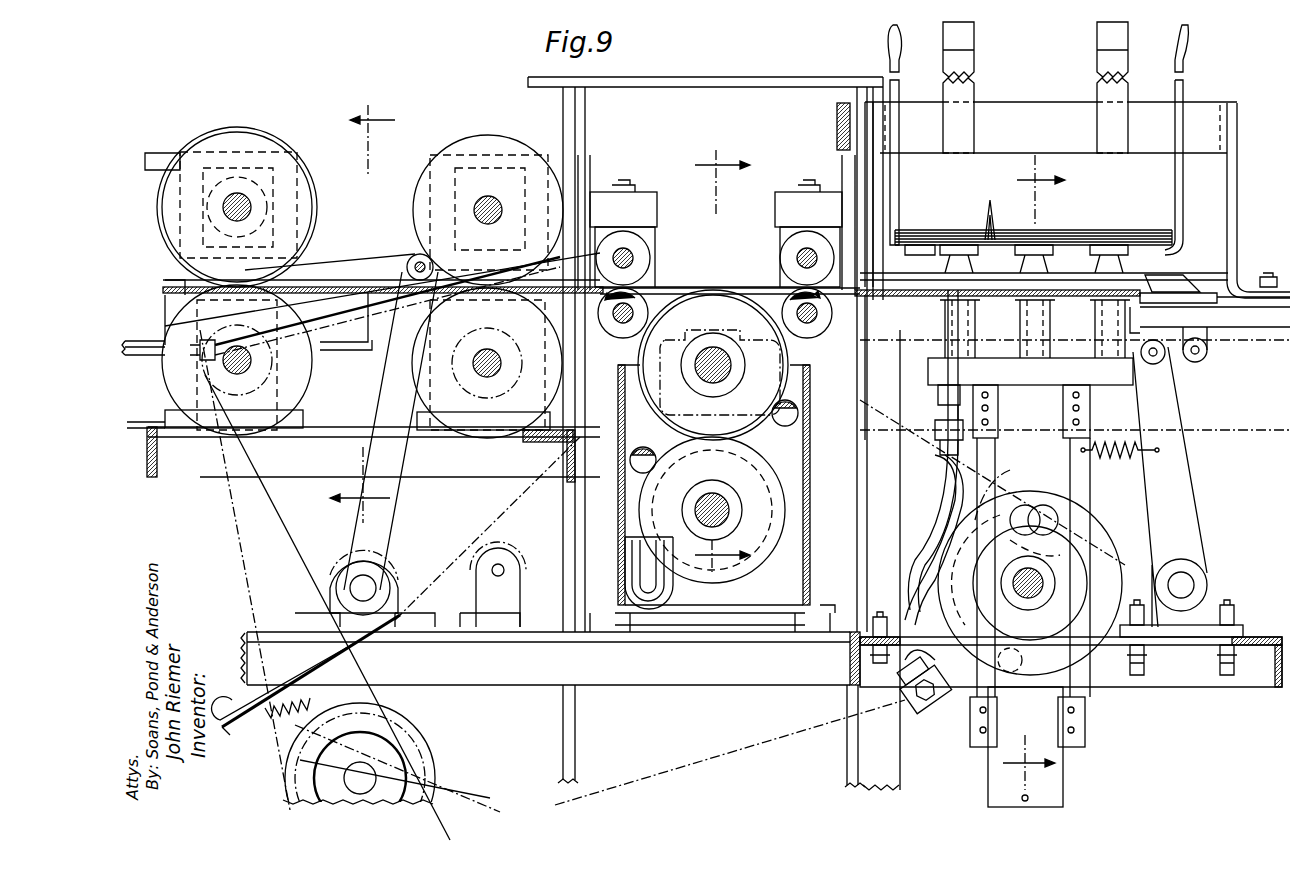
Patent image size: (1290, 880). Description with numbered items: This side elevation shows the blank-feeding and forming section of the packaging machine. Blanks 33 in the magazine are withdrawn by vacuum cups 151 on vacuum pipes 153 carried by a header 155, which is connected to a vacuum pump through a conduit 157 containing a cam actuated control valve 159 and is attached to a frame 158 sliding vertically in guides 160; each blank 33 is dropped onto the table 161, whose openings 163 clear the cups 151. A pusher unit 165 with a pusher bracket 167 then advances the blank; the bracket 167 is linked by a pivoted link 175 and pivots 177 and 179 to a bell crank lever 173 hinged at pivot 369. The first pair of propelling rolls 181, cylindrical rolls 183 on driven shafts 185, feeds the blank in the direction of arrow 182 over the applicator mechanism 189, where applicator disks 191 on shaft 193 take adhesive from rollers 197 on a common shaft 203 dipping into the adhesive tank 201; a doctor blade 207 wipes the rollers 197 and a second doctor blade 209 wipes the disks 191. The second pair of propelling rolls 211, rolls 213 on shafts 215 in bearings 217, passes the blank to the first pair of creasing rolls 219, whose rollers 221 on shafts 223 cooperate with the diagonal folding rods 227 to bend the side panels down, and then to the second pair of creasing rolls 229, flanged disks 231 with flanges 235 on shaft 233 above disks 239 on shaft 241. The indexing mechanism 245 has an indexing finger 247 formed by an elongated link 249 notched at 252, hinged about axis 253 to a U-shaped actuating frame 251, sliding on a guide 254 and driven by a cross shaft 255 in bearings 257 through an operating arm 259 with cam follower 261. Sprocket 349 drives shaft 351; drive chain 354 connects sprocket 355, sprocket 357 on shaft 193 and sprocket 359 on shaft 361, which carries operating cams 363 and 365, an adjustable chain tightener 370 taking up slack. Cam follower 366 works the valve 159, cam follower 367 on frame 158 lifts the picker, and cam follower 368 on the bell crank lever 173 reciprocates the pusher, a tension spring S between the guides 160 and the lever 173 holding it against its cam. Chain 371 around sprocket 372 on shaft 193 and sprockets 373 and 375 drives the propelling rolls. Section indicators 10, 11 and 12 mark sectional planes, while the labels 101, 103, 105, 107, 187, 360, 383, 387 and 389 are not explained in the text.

The section line 10 is at (716, 360).
The section line 11 is at (1030, 472).
The section line 12 is at (378, 314).
The blanks 33 is at (994, 209).
The tank 101 is at (1185, 90).
The tank columns 103 is at (1100, 48).
The guide rods 105 is at (888, 230).
The strip 107 is at (1068, 230).
The vacuum cups 151 is at (962, 315).
The vacuum pipes 153 is at (965, 352).
The header 155 is at (1040, 372).
The conduit 157 is at (992, 475).
The frame 158 is at (1022, 435).
The cam actuated control valve 159 is at (962, 715).
The guides 160 is at (1063, 400).
The table 161 is at (1060, 283).
The openings 163 is at (1100, 300).
The pusher unit 165 is at (1165, 360).
The pusher bracket 167 is at (1215, 275).
The bell crank lever 173 is at (1195, 500).
The pivoted link 175 is at (1175, 390).
The pivot 177 is at (1205, 362).
The pivot 179 is at (1092, 402).
The propelling rolls 181 is at (788, 240).
The arrow 182 is at (910, 270).
The rolls 183 is at (805, 258).
The driven shaft 185 is at (905, 283).
The roller 187 is at (800, 260).
The applicator mechanism 189 is at (718, 270).
The applicator disks 191 is at (787, 425).
The shaft 193 is at (720, 358).
The rollers 197 is at (780, 495).
The adhesive tank 201 is at (800, 468).
The common shaft 203 is at (730, 505).
The doctor blade 207 is at (647, 452).
The second doctor blade 209 is at (810, 450).
The second pair of propelling rolls 211 is at (648, 270).
The cylindrical rolls 213 is at (640, 280).
The shaft 215 is at (635, 245).
The bearings 217 is at (597, 225).
The first pair of creasing rolls 219 is at (510, 93).
The cylindrical rollers 221 is at (430, 178).
The shaft 223 is at (484, 200).
The folding rods 227 is at (390, 255).
The second pair of creasing rolls 229 is at (338, 100).
The disks 231 is at (252, 145).
The common shaft 233 is at (230, 200).
The flange 235 is at (226, 130).
The disks 239 is at (313, 385).
The shaft 241 is at (245, 345).
The indexing mechanism 245 is at (360, 415).
The indexing finger 247 is at (340, 268).
The elongated link 249 is at (340, 230).
The U-shaped actuating frame 251 is at (392, 368).
The notch 252 is at (185, 282).
The hinge axis 253 is at (418, 262).
The guide 254 is at (190, 290).
The cross shaft 255 is at (355, 588).
The bearings 257 is at (398, 580).
The operating arm 259 is at (283, 625).
The cam follower 261 is at (290, 665).
The sprocket 349 is at (378, 708).
The shaft 351 is at (432, 748).
The drive chain 354 is at (690, 745).
The sprocket 355 is at (420, 725).
The sprocket 357 is at (728, 380).
The sprocket 359 is at (1058, 520).
The hose 360 is at (935, 548).
The shaft 361 is at (1045, 600).
The operating cam 363 is at (1015, 690).
The operating cam 365 is at (930, 505).
The cam follower 366 is at (1010, 700).
The cam follower 367 is at (1015, 475).
The cam follower 368 is at (1045, 518).
The pivot 369 is at (1195, 580).
The adjustable chain tightener 370 is at (520, 585).
The chain 371 is at (880, 385).
The sprocket 372 is at (716, 443).
The sprocket 373 is at (452, 345).
The sprocket 375 is at (835, 318).
The rod 383 is at (238, 540).
The reel housing 387 is at (458, 310).
The reel hub 389 is at (256, 360).
The tension spring S is at (1118, 452).